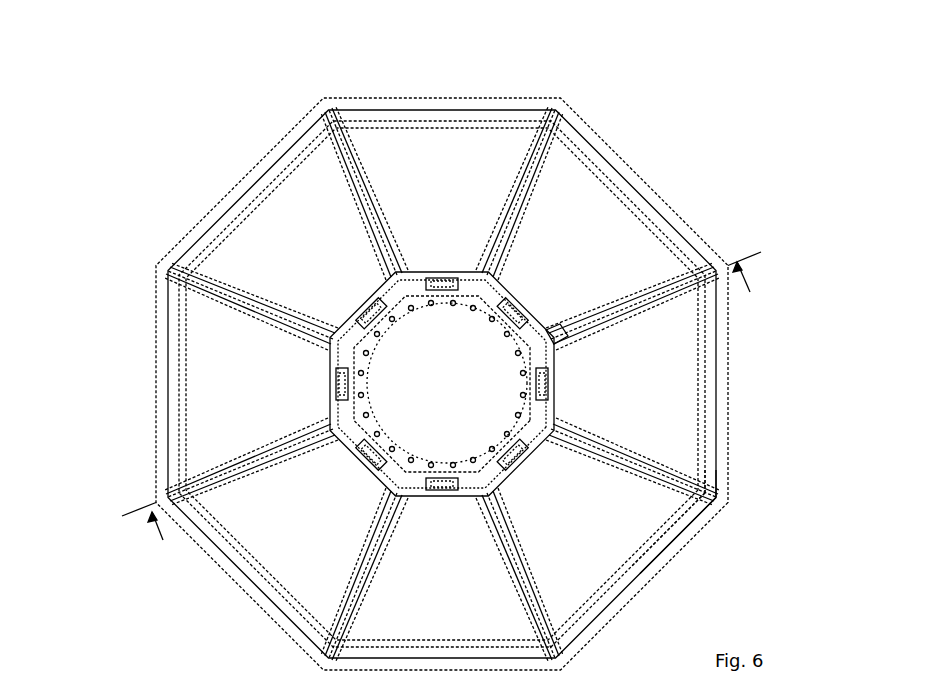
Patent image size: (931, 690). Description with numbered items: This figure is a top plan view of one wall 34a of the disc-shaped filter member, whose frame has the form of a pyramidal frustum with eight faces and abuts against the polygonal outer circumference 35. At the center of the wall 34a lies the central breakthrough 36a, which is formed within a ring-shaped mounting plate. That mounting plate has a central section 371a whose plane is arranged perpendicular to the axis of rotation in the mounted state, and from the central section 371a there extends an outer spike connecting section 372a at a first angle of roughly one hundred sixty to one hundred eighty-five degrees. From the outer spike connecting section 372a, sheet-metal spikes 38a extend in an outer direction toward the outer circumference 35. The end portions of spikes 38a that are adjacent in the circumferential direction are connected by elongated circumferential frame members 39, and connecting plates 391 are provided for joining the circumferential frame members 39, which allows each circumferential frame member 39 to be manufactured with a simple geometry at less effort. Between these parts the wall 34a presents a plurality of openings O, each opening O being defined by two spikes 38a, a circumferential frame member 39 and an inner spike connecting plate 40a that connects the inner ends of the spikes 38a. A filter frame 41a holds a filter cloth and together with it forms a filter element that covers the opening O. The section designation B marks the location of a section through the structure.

The wall 34a is at (183, 393).
The outer circumference 35 is at (658, 567).
The central breakthrough 36a is at (468, 392).
The spike 38a is at (355, 205).
The circumferential frame member 39 is at (653, 187).
The connecting plate 391 is at (724, 478).
The central section 371a is at (550, 322).
The outer spike connecting section 372a is at (498, 293).
The inner spike connecting plate 40a is at (553, 404).
The filter frame 41a is at (260, 470).
The opening O is at (663, 430).
The section line B- B is at (442, 402).